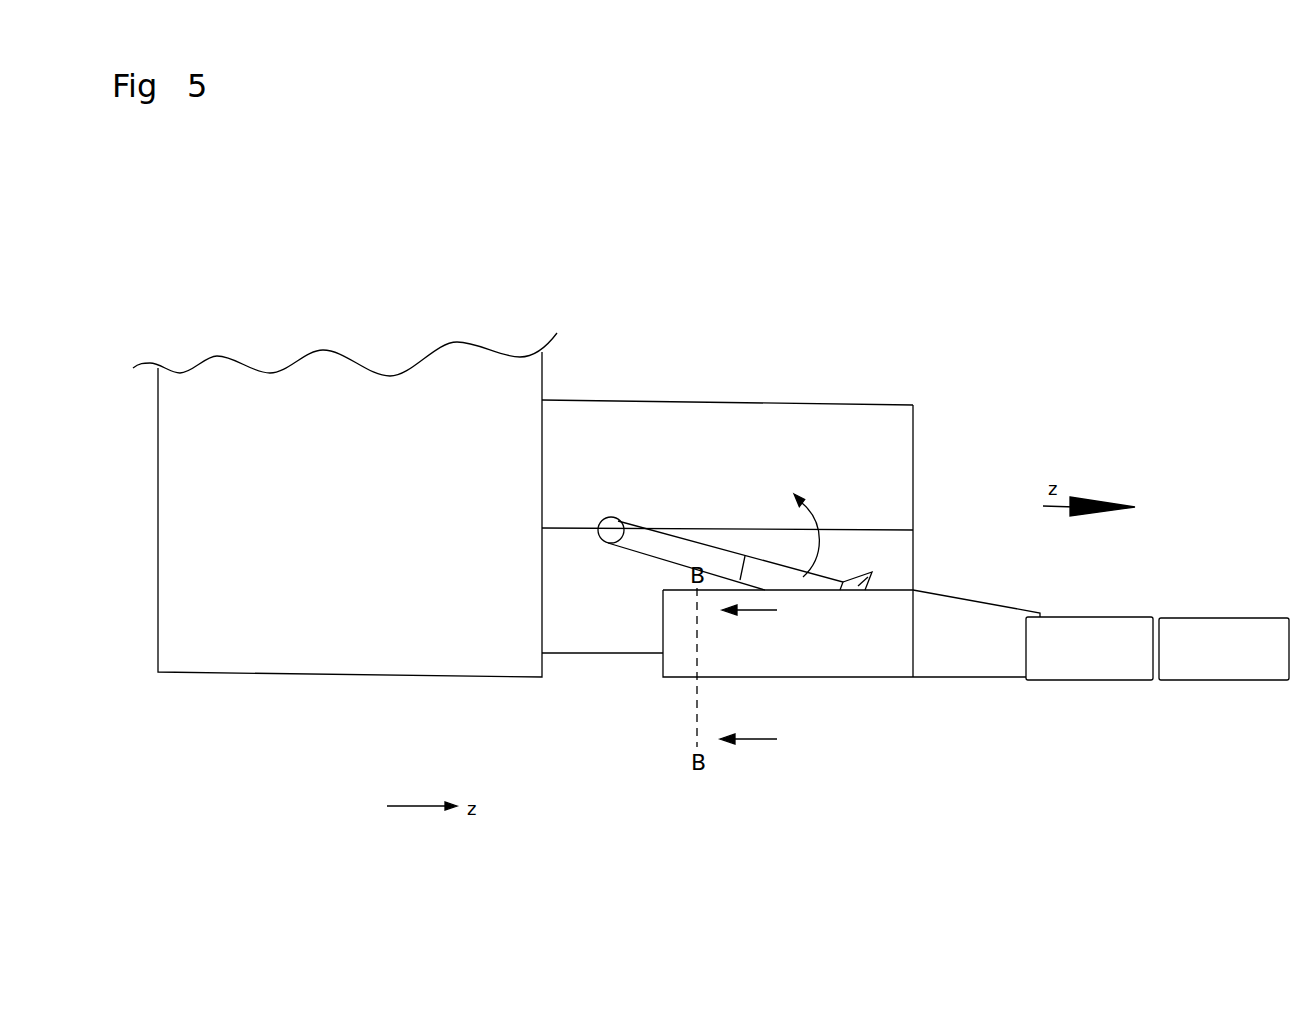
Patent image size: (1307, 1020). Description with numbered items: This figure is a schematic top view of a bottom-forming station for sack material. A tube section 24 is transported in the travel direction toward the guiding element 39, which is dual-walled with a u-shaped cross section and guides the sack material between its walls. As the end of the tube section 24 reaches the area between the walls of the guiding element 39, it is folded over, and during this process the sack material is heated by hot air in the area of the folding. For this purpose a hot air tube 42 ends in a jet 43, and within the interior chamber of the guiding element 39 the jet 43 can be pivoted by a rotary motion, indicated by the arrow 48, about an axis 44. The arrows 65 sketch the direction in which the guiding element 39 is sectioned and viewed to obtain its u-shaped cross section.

The tube section 24 is at (345, 638).
The guiding element 39 is at (940, 697).
The hot air tube 42 is at (698, 560).
The jet 43 is at (872, 572).
The axis 44 is at (615, 520).
The arrow 48 is at (812, 513).
The arrows 65 is at (767, 612).